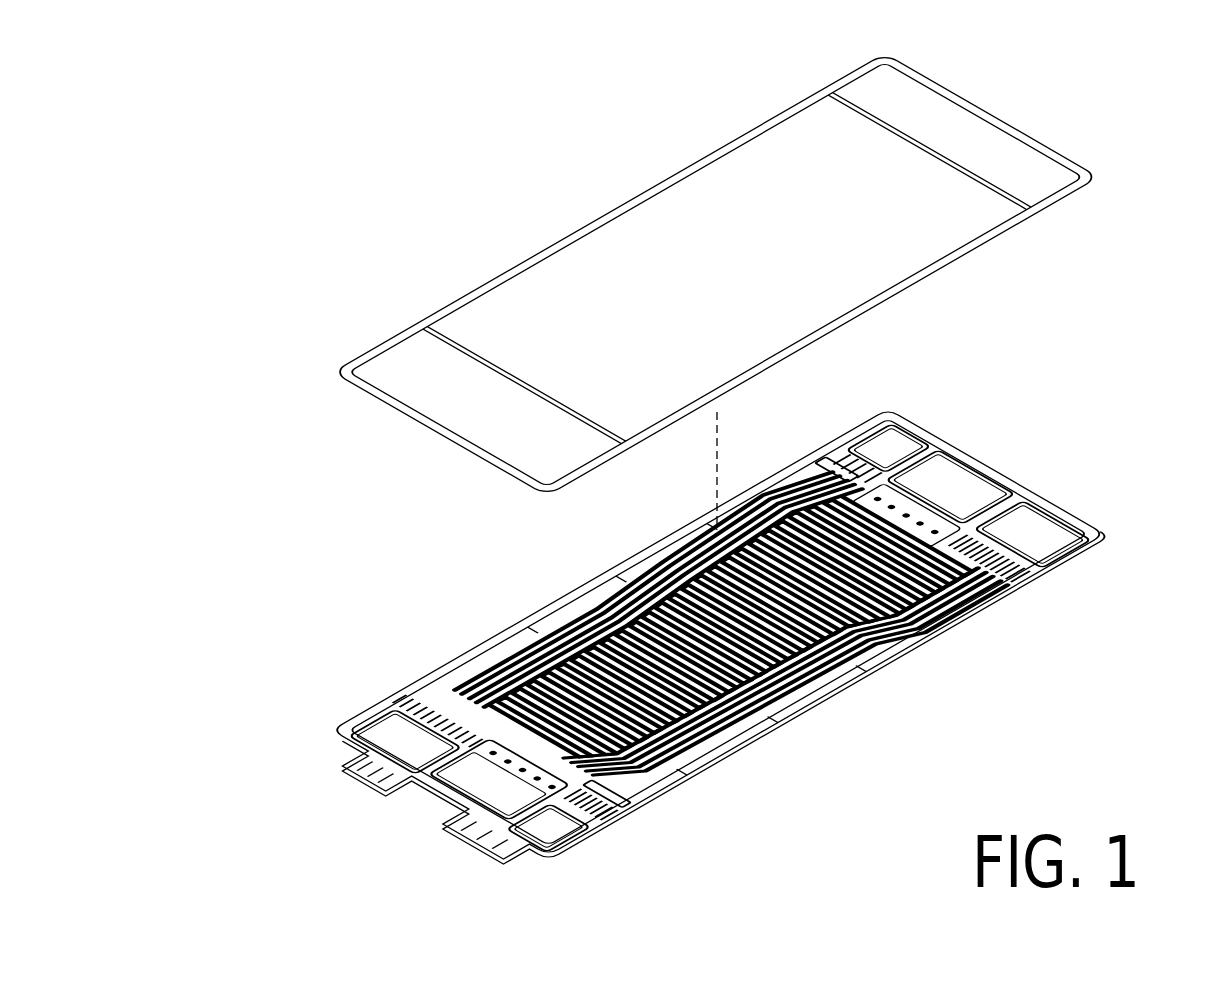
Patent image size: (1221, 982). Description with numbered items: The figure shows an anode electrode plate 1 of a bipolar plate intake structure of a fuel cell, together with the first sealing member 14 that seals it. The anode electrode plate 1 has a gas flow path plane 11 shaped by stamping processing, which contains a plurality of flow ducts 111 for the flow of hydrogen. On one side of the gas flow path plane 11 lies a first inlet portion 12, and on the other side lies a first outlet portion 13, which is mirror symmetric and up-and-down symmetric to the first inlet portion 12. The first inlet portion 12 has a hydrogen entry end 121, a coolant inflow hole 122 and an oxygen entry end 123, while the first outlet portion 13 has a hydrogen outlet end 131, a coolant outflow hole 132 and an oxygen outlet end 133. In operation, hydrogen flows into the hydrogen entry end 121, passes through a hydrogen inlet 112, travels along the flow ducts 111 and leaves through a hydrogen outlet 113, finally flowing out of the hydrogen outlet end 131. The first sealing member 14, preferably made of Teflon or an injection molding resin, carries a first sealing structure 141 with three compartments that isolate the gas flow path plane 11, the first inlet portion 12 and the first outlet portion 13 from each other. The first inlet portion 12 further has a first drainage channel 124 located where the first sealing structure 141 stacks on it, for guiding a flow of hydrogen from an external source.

The anode electrode plate 1 is at (993, 636).
The gas flow path plane 11 is at (760, 725).
The flow ducts 111 is at (722, 634).
The hydrogen inlet 112 is at (836, 469).
The hydrogen outlet 113 is at (607, 794).
The first inlet portion 12 is at (1192, 458).
The hydrogen entry end 121 is at (888, 448).
The coolant inflow hole 122 is at (950, 487).
The oxygen entry end 123 is at (1033, 534).
The first drainage channel 124 is at (989, 558).
The first outlet portion 13 is at (433, 937).
The hydrogen outlet end 131 is at (548, 828).
The coolant outflow hole 132 is at (499, 779).
The oxygen outlet end 133 is at (405, 742).
The first sealing member 14 is at (545, 200).
The first sealing structure 141 is at (850, 70).